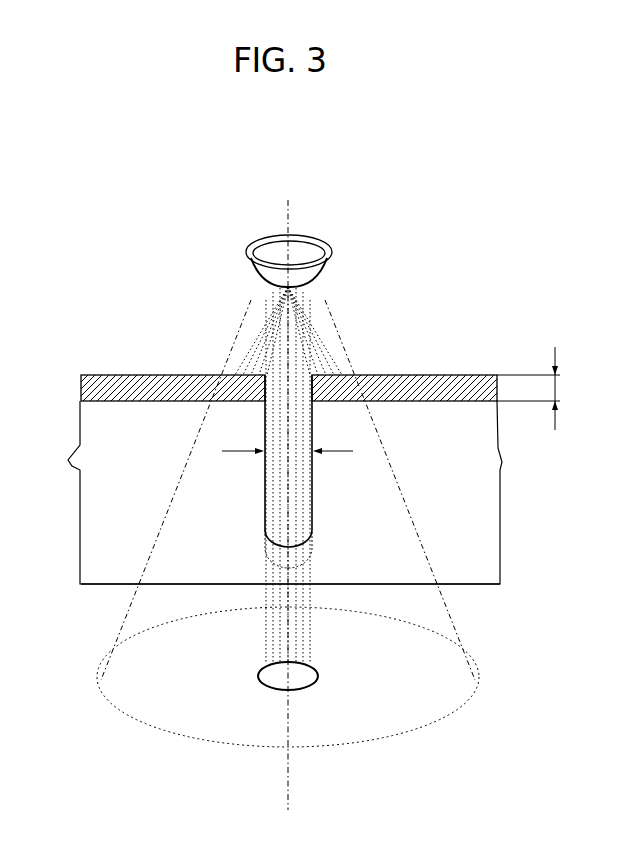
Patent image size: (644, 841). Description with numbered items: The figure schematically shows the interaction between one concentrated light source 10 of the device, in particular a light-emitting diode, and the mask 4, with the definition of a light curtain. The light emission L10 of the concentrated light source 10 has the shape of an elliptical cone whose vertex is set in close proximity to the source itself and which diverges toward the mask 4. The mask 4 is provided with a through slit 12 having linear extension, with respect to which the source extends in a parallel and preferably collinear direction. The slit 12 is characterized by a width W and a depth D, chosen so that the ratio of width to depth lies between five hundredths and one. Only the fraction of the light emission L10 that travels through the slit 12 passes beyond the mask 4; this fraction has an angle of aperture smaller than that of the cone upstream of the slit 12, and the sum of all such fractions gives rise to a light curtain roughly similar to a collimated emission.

The concentrated light source 10 is at (322, 242).
The light emission L10 is at (248, 302).
The mask 4 is at (481, 485).
The slit 12 is at (264, 476).
The depth of the slit D is at (540, 388).
The width of the slit W is at (287, 438).